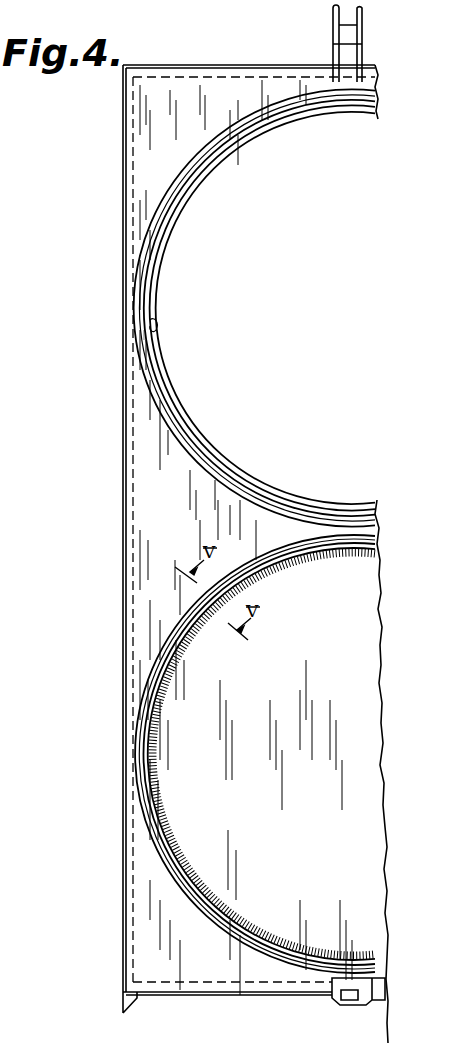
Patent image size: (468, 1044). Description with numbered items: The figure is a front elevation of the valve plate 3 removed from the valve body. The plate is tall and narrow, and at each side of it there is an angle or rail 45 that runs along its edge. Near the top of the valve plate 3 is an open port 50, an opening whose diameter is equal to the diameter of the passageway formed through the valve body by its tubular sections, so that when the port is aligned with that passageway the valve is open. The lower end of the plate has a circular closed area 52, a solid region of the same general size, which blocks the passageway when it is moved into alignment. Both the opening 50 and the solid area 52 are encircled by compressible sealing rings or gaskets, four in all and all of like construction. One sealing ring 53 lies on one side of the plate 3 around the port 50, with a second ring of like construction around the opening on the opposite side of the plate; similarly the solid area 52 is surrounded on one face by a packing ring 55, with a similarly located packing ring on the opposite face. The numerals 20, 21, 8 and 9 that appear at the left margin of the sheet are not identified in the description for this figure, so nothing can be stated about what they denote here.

The valve plate 3 is at (133, 160).
The angle or rail 45 is at (123, 275).
The open port 50 is at (152, 323).
The sealing ring 53 is at (152, 353).
The packing ring 55 is at (152, 787).
The circular closed area 52 is at (350, 681).
The edge numeral 20 is at (11, 669).
The edge numeral 21 is at (13, 731).
The edge numeral 8 is at (0, 795).
The edge numeral 9 is at (0, 905).